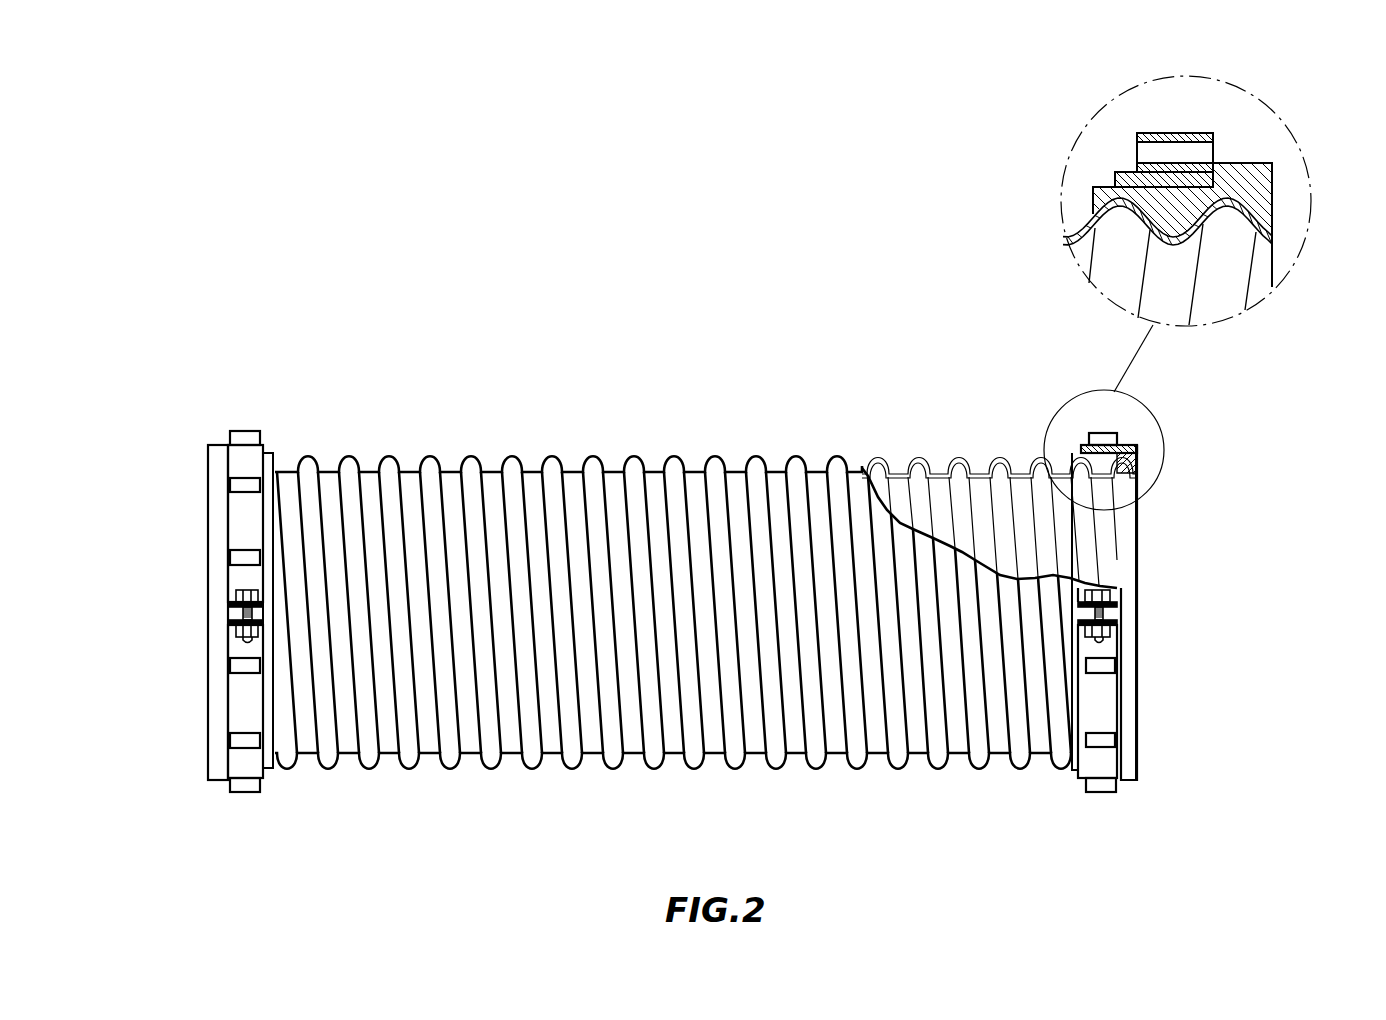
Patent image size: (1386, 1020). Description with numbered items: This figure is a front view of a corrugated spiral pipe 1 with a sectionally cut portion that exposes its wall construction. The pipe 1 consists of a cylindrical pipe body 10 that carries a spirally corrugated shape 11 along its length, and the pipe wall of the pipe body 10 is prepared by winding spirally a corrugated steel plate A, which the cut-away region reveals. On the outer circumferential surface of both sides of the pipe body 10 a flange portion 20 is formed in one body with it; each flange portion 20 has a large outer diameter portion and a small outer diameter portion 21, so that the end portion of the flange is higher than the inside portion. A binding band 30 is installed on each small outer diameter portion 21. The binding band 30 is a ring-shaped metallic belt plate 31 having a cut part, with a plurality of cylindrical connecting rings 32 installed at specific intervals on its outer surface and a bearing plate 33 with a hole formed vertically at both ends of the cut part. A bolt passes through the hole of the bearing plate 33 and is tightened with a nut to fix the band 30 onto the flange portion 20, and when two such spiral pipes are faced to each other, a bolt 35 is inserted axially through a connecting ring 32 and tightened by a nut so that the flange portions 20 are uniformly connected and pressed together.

The spiral pipe 1 is at (656, 398).
The pipe body 10 is at (696, 566).
The spirally corrugated shape 11 is at (545, 456).
The flange portion 20 is at (210, 770).
The small outer diameter portion 21 is at (273, 765).
The binding band 30 is at (679, 415).
The metallic belt plate 31 is at (235, 522).
The connecting ring 32 is at (243, 668).
The bearing plate 33 is at (233, 632).
The bolt 35 is at (247, 590).
The corrugated steel plate A is at (918, 458).